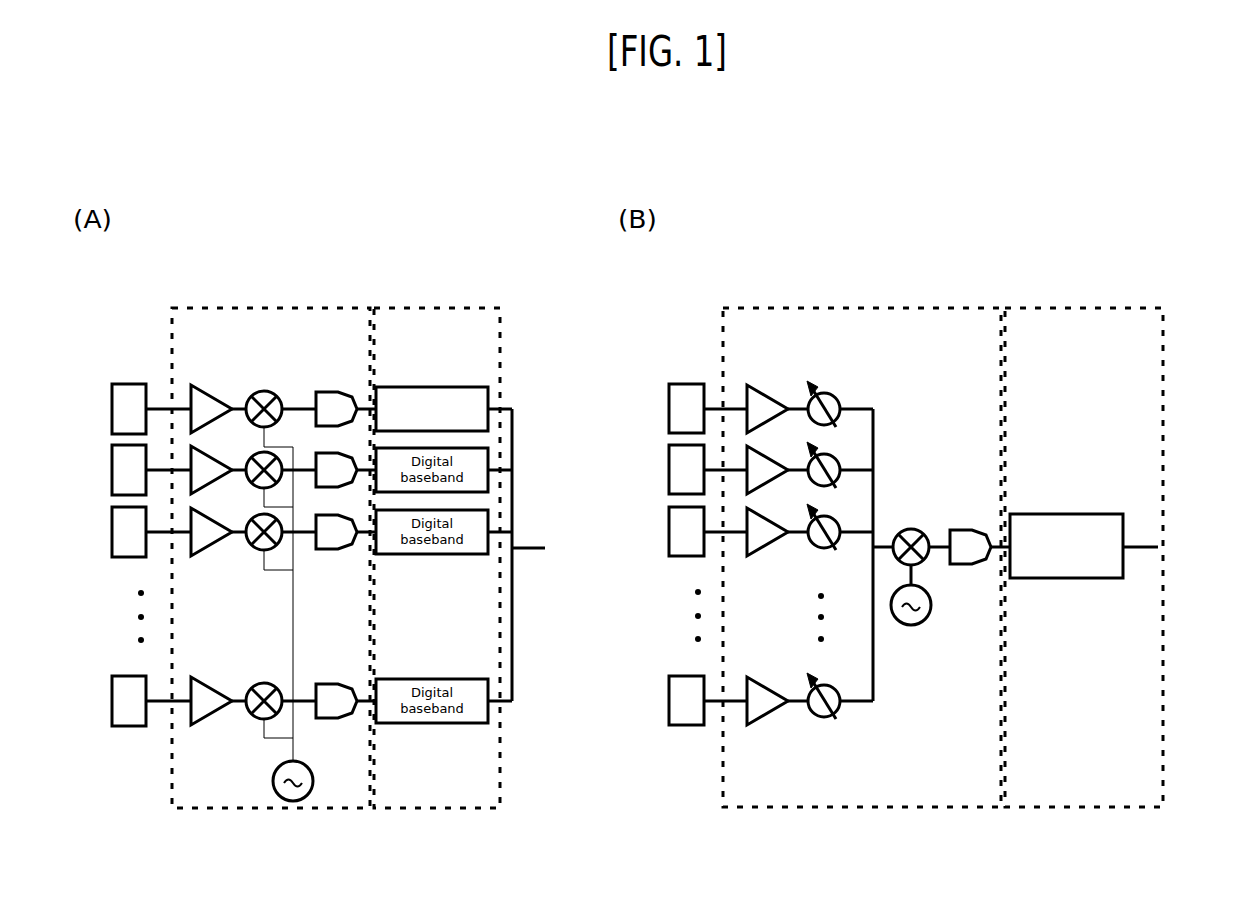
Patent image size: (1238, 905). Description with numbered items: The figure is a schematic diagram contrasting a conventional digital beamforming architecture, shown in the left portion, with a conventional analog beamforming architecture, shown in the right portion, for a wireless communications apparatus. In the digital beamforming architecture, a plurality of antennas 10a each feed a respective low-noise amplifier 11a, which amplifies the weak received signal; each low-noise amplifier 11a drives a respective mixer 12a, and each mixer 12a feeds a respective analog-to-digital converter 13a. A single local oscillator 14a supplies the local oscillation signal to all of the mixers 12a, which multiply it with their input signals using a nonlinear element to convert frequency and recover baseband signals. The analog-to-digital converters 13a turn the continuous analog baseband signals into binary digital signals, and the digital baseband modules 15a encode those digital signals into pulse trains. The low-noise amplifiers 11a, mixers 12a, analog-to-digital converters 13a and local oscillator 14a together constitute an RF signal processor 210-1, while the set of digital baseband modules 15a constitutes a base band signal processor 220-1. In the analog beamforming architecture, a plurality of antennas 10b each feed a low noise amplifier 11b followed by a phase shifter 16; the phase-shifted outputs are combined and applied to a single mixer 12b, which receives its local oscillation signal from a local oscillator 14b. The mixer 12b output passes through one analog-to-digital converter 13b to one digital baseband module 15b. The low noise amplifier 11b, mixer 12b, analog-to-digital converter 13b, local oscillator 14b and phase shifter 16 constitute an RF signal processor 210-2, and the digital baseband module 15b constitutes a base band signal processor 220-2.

The antennas 10a is at (130, 383).
The low-noise amplifiers 11a is at (207, 383).
The mixers 12a is at (266, 390).
The analog-to-digital converters 13a is at (334, 392).
The local oscillator 14a is at (273, 779).
The digital baseband modules 15a is at (431, 387).
The RF signal processor 210-1 is at (257, 308).
The base band signal processor 220-1 is at (440, 308).
The antennas 10b is at (683, 383).
The low noise amplifier 11b is at (763, 383).
The mixer 12b is at (910, 528).
The analog-to-digital converter 13b is at (968, 527).
The local oscillator 14b is at (919, 625).
The digital baseband module 15b is at (1072, 514).
The phase shifter 16 is at (836, 393).
The RF signal processor 210-2 is at (858, 308).
The base band signal processor 220-2 is at (1090, 308).